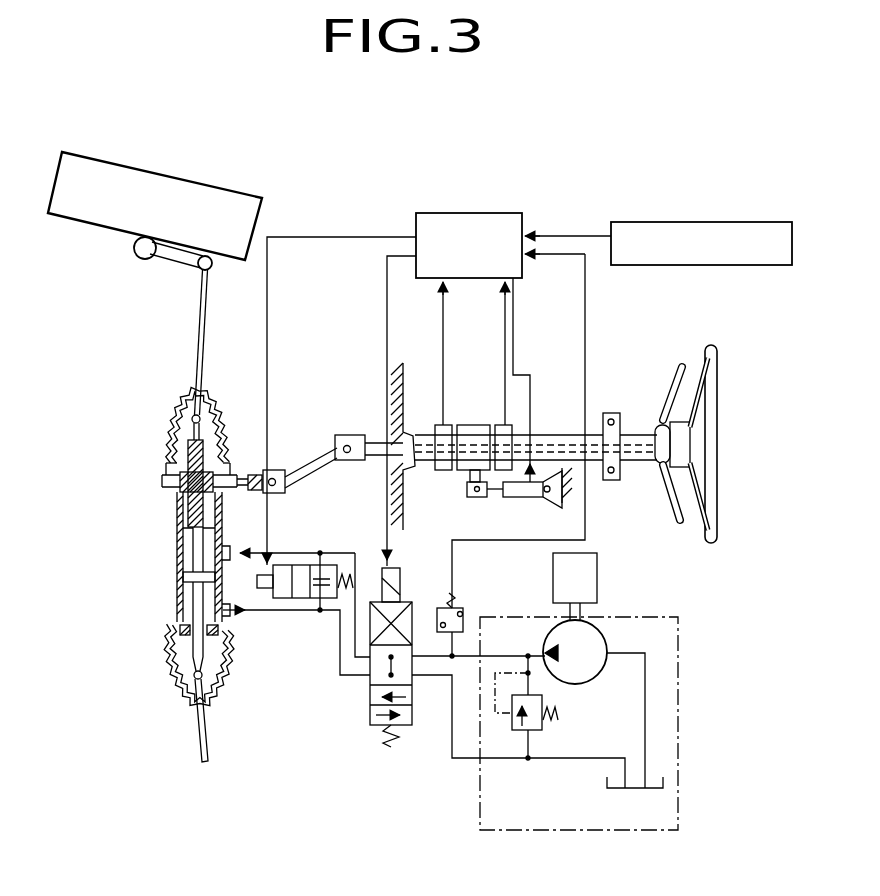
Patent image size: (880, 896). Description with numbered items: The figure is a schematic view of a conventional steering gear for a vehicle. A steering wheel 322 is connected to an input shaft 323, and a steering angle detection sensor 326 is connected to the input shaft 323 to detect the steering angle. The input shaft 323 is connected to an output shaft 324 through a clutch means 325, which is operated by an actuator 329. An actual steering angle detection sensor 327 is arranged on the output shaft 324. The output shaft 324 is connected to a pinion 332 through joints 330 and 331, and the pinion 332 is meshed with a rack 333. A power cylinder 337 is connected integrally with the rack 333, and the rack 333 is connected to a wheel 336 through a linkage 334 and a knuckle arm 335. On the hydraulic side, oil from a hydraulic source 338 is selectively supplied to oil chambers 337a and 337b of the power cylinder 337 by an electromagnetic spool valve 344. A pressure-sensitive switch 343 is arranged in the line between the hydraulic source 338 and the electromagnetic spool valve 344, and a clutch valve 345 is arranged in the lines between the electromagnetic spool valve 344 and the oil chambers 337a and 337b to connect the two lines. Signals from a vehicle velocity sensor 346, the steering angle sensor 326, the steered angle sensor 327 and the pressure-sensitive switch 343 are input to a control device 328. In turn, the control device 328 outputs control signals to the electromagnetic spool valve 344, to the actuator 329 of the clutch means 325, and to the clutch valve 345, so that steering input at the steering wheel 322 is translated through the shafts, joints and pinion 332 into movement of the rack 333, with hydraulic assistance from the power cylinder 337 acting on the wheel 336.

The steering wheel 322 is at (712, 390).
The input shaft 323 is at (635, 443).
The output shaft 324 is at (377, 442).
The clutch means 325 is at (467, 423).
The steering angle detection sensor 326 is at (498, 423).
The actual steering angle detection sensor 327 is at (443, 472).
The control device 328 is at (500, 213).
The actuator 329 is at (530, 497).
The joint 330 is at (348, 435).
The joint 331 is at (278, 470).
The pinion 332 is at (173, 467).
The rack 333 is at (190, 513).
The linkage 334 is at (200, 353).
The knuckle arm 335 is at (165, 263).
The wheel 336 is at (243, 190).
The power cylinder 337 is at (183, 574).
The oil chamber 337a is at (188, 553).
The oil chamber 337b is at (188, 608).
The hydraulic source 338 is at (678, 683).
The pressure-sensitive switch 343 is at (462, 607).
The electromagnetic spool valve 344 is at (370, 710).
The clutch valve 345 is at (283, 600).
The vehicle velocity sensor 346 is at (630, 222).